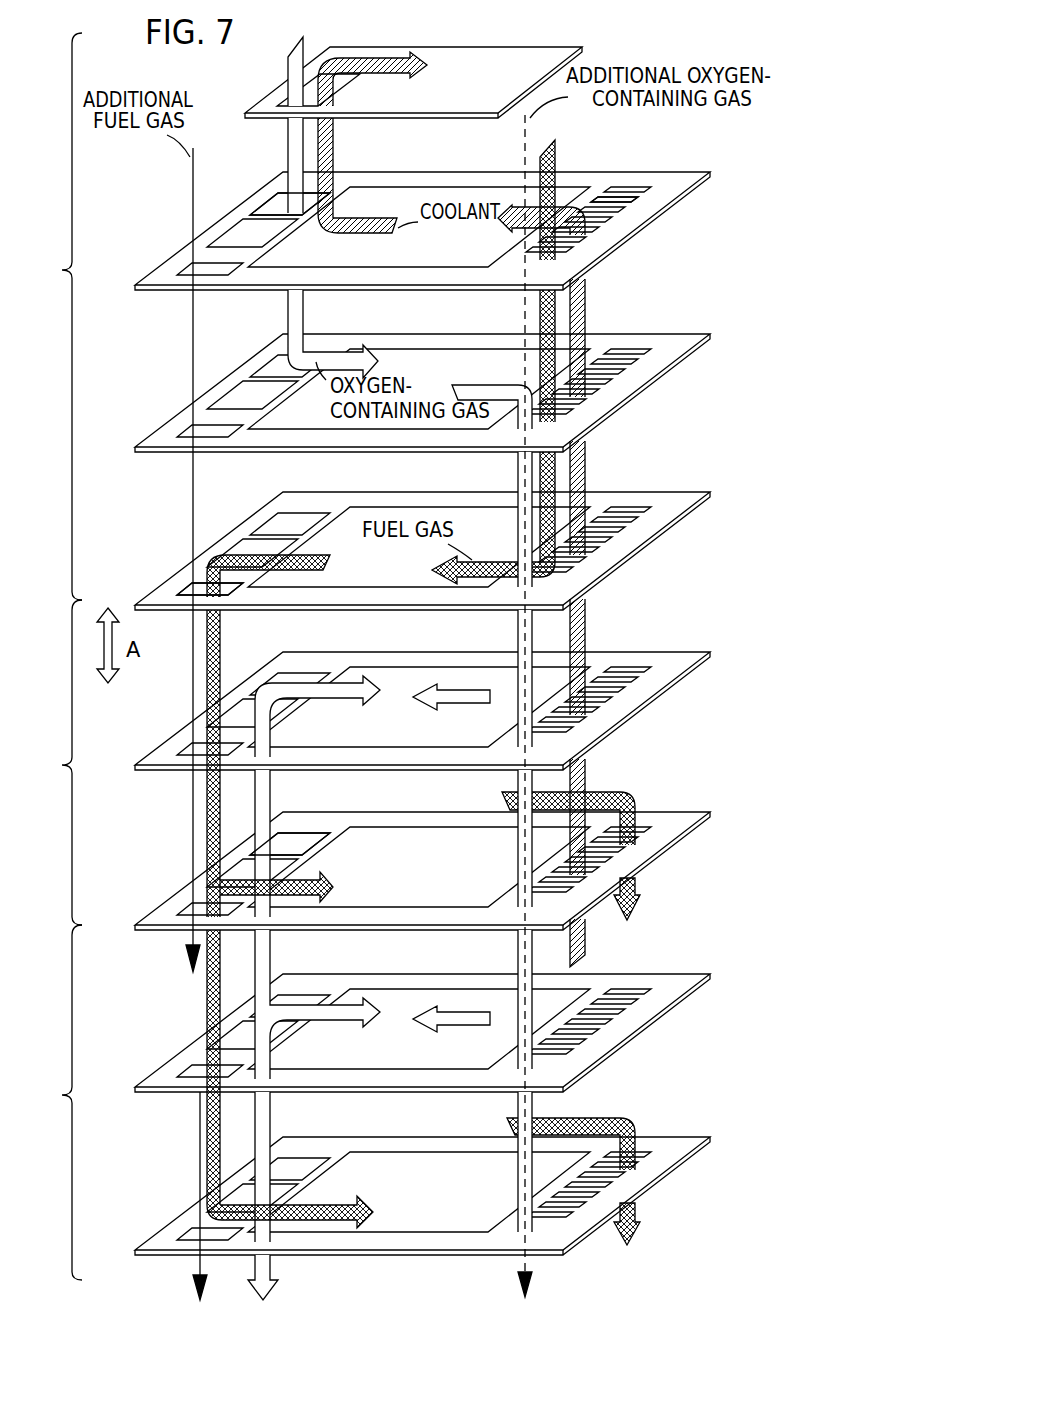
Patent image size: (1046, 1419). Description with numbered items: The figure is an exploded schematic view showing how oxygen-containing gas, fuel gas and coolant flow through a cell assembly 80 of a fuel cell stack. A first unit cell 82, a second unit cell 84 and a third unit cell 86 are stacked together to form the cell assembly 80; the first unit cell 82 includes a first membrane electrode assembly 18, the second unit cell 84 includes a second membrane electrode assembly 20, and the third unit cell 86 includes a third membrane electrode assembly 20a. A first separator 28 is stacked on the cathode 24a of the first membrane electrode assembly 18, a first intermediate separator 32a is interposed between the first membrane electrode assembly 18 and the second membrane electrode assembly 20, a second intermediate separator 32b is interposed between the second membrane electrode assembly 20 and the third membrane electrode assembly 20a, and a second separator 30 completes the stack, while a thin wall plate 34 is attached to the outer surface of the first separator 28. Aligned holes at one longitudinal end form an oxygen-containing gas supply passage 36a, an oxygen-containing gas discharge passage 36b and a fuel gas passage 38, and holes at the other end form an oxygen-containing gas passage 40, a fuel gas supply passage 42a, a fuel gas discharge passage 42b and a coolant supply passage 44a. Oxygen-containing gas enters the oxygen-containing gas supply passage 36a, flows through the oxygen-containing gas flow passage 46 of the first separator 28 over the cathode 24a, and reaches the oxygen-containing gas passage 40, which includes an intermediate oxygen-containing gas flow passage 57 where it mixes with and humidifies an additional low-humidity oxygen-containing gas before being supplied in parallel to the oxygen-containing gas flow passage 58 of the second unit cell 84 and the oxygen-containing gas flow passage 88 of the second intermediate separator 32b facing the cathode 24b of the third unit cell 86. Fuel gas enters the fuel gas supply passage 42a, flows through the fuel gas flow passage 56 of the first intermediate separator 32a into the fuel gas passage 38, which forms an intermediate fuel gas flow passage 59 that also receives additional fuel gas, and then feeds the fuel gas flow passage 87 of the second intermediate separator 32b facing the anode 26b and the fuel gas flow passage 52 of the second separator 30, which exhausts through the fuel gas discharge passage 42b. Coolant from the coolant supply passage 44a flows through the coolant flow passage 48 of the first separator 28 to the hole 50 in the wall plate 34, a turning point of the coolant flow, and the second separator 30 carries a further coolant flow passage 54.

The cell assembly 80 is at (690, 37).
The first unit cell 82 is at (57, 316).
The second unit cell 84 is at (57, 762).
The third unit cell 86 is at (57, 1102).
The wall plate 34 is at (480, 46).
The first separator 28 is at (640, 166).
The first membrane electrode assembly 18 is at (662, 328).
The first intermediate separator 32a is at (660, 483).
The second membrane electrode assembly 20 is at (658, 648).
The second intermediate separator 32b is at (658, 808).
The third membrane electrode assembly 20a is at (662, 973).
The second separator 30 is at (662, 1133).
The hole 50 is at (330, 62).
The coolant flow passage 54 is at (398, 58).
The coolant flow passage 48 is at (497, 219).
The coolant supply passage 44a is at (612, 227).
The fuel gas supply passage 42a is at (580, 257).
The oxygen-containing gas supply passage 36a is at (268, 210).
The cathode 24a is at (412, 354).
The oxygen-containing gas flow passage 46 is at (471, 388).
The oxygen-containing gas passage 40 is at (566, 432).
The intermediate oxygen-containing gas flow passage 57 is at (516, 478).
The fuel gas flow passage 56 is at (328, 561).
The fuel gas passage 38 is at (186, 590).
The intermediate fuel gas flow passage 59 is at (222, 637).
The cathode 24b is at (412, 676).
The oxygen-containing gas flow passage 58 is at (346, 698).
The anode 26b is at (416, 735).
The oxygen-containing gas discharge passage 36b is at (284, 858).
The fuel gas flow passage 87 is at (334, 884).
The fuel gas discharge passage 42b is at (646, 840).
The oxygen-containing gas flow passage 88 is at (436, 1031).
The fuel gas flow passage 52 is at (374, 1213).